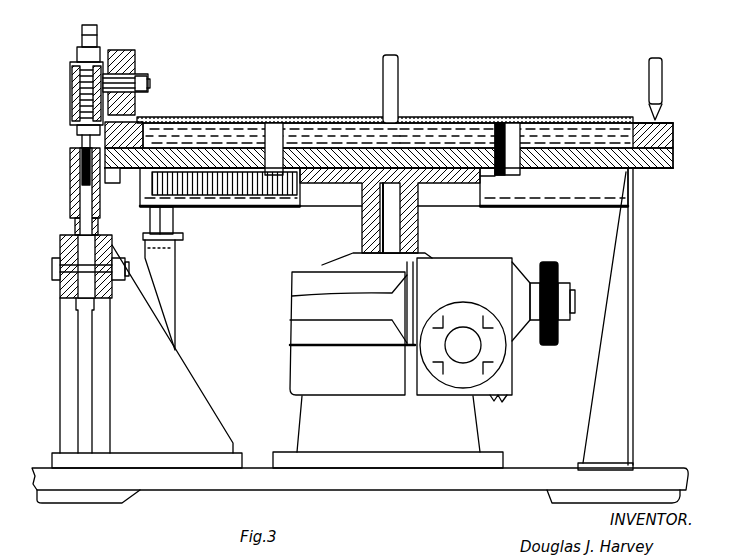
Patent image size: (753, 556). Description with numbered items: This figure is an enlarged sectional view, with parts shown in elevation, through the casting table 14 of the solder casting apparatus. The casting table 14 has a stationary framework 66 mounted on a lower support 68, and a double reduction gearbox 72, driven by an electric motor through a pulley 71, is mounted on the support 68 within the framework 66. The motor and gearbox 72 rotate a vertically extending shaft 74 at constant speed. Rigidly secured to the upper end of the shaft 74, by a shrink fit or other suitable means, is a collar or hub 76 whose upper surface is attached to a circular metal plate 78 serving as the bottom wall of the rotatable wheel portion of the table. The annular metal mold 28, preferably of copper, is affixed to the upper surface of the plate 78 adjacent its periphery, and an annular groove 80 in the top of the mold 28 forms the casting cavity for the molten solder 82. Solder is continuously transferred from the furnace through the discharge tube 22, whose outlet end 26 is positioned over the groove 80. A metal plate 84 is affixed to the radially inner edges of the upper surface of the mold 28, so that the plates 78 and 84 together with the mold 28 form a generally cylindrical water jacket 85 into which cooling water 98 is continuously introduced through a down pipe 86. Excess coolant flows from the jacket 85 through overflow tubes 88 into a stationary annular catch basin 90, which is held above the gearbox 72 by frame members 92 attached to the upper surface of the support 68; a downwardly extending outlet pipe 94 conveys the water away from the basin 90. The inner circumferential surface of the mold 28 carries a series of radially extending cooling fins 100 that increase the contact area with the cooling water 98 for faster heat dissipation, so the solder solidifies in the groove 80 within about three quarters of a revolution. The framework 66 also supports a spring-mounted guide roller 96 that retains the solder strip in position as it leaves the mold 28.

The casting table 14 is at (688, 166).
The discharge tube 22 is at (660, 80).
The outlet end 26 is at (650, 112).
The annular metal mold 28 is at (673, 143).
The stationary framework 66 is at (60, 370).
The lower support 68 is at (665, 470).
The pulley 71 is at (555, 265).
The double reduction gearbox 72 is at (300, 305).
The vertically extending shaft 74 is at (372, 235).
The collar or hub 76 is at (440, 185).
The circular metal plate 78 is at (643, 170).
The annular groove 80 is at (673, 128).
The molten solder 82 is at (662, 122).
The metal plate 84 is at (228, 120).
The water jacket 85 is at (330, 120).
The down pipe 86 is at (398, 88).
The overflow tubes 88 is at (272, 175).
The annular catch basin 90 is at (203, 210).
The frame members 92 is at (633, 315).
The outlet pipe 94 is at (170, 245).
The guide roller 96 is at (128, 62).
The cooling water 98 is at (575, 132).
The cooling fins 100 is at (162, 122).